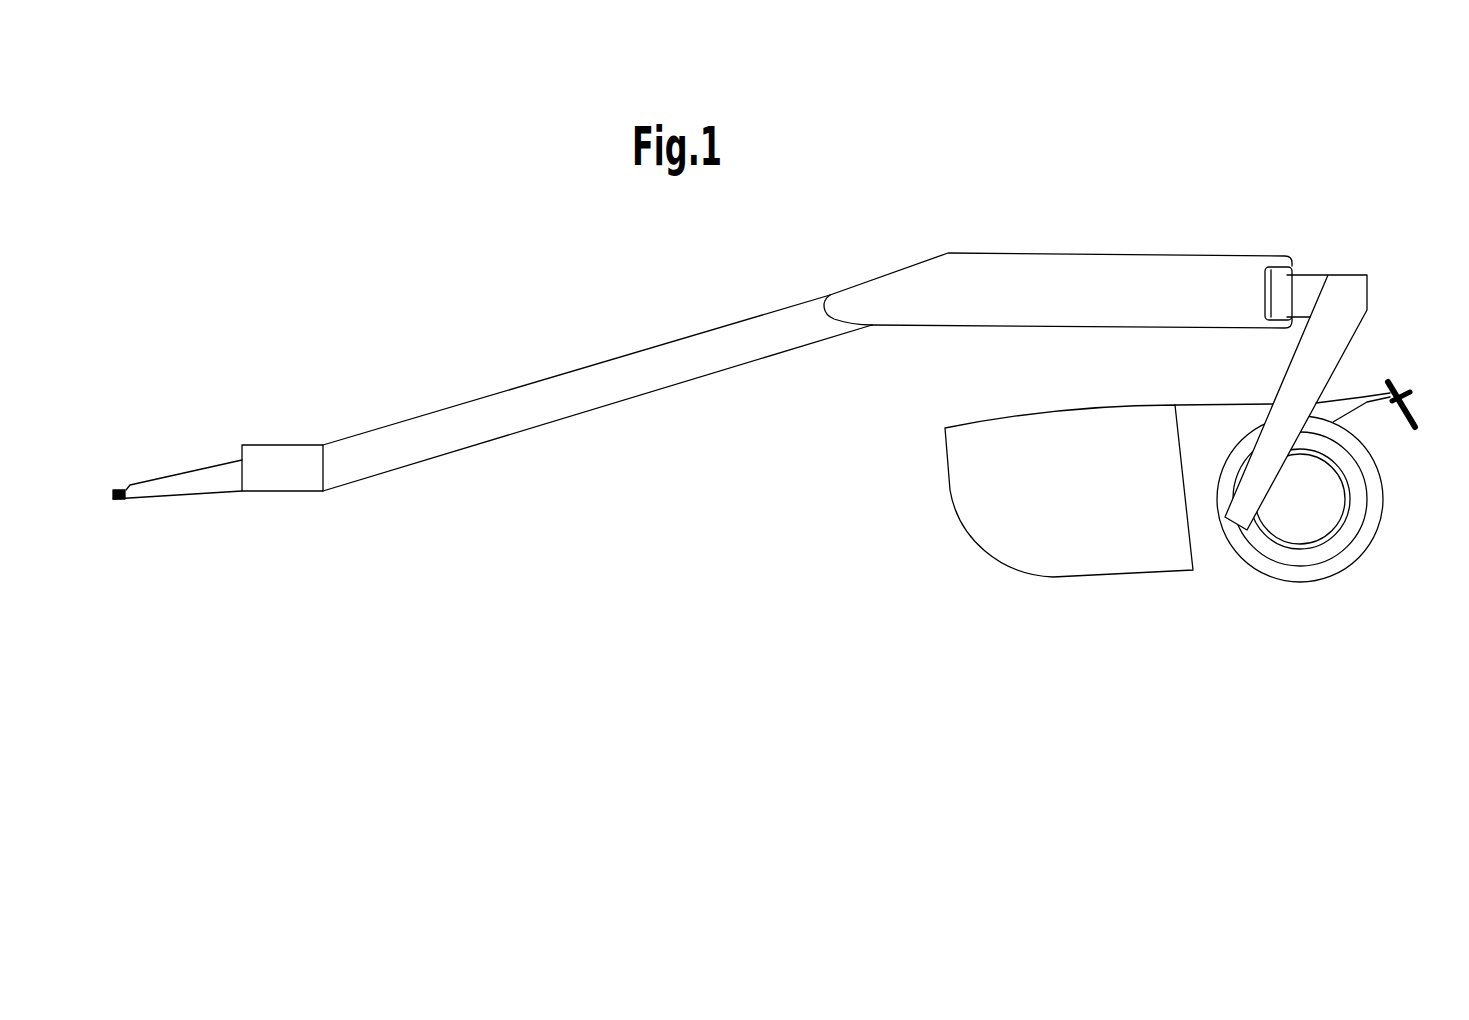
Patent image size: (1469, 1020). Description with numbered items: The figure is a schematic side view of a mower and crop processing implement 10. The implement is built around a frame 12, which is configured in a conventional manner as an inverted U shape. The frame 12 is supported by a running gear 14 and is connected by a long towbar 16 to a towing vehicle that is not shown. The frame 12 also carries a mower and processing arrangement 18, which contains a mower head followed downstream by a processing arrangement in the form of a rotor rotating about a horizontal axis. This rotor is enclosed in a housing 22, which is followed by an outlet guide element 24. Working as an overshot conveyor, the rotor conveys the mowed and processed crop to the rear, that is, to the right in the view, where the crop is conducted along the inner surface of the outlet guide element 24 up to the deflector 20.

The mower and crop processing implement 10 is at (702, 357).
The frame 12 is at (1345, 275).
The running gear 14 is at (1287, 650).
The towbar 16 is at (520, 420).
The mower and processing arrangement 18 is at (1149, 462).
The deflector 20 is at (1411, 348).
The housing 22 is at (1093, 512).
The outlet guide element 24 is at (1223, 537).